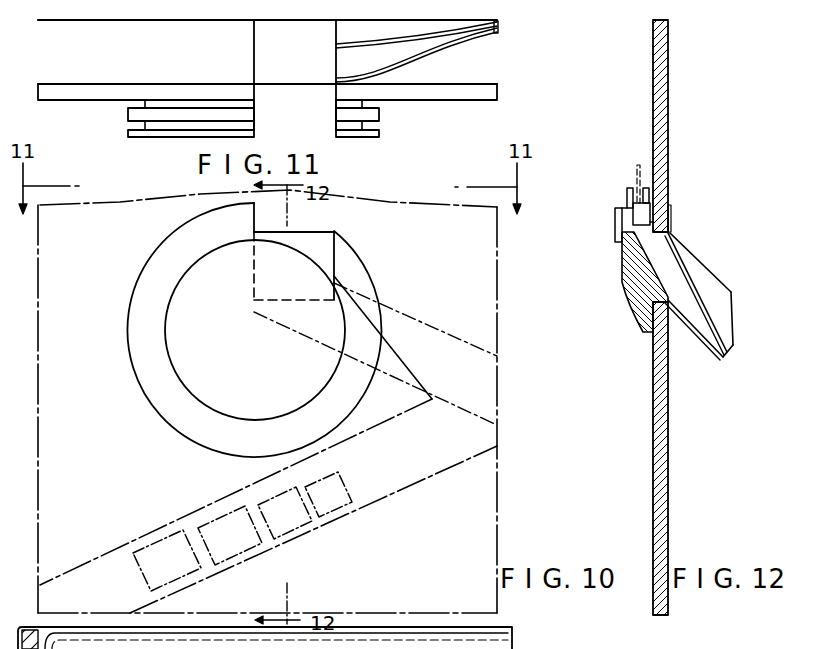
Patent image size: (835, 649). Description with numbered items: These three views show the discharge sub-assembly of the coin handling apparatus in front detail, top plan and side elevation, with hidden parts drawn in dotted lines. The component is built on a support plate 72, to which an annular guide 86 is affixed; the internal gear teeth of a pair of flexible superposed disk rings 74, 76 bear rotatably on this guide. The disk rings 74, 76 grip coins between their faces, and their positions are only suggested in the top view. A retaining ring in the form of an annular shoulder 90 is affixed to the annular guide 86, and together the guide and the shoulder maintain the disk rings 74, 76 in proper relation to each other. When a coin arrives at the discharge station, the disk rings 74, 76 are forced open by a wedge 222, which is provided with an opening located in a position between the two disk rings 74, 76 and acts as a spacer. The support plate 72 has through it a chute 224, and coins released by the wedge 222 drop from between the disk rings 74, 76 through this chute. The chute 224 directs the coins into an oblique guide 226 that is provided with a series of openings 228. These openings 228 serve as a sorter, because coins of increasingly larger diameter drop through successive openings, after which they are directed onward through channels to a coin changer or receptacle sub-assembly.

In FIG. 11, the support plate 72 is at (80, 91).
In FIG. 12, the support plate 72 is at (668, 132).
In FIG. 11, the disk ring 74 is at (130, 128).
In FIG. 12, the disk ring 74 is at (627, 196).
In FIG. 11, the disk ring 76 is at (130, 103).
In FIG. 12, the disk ring 76 is at (649, 186).
In FIG. 11, the annular guide 86 is at (172, 115).
In FIG. 11, the annular shoulder 90 is at (142, 138).
In FIG. 10, the annular shoulder 90 is at (168, 413).
In FIG. 12, the annular shoulder 90 is at (620, 225).
In FIG. 11, the wedge 222 is at (317, 105).
In FIG. 10, the wedge 222 is at (307, 278).
In FIG. 12, the wedge 222 is at (650, 246).
In FIG. 11, the chute 224 is at (352, 61).
In FIG. 10, the chute 224 is at (437, 337).
In FIG. 12, the chute 224 is at (680, 270).
In FIG. 10, the oblique guide 226 is at (388, 472).
In FIG. 10, the openings 228 is at (293, 527).